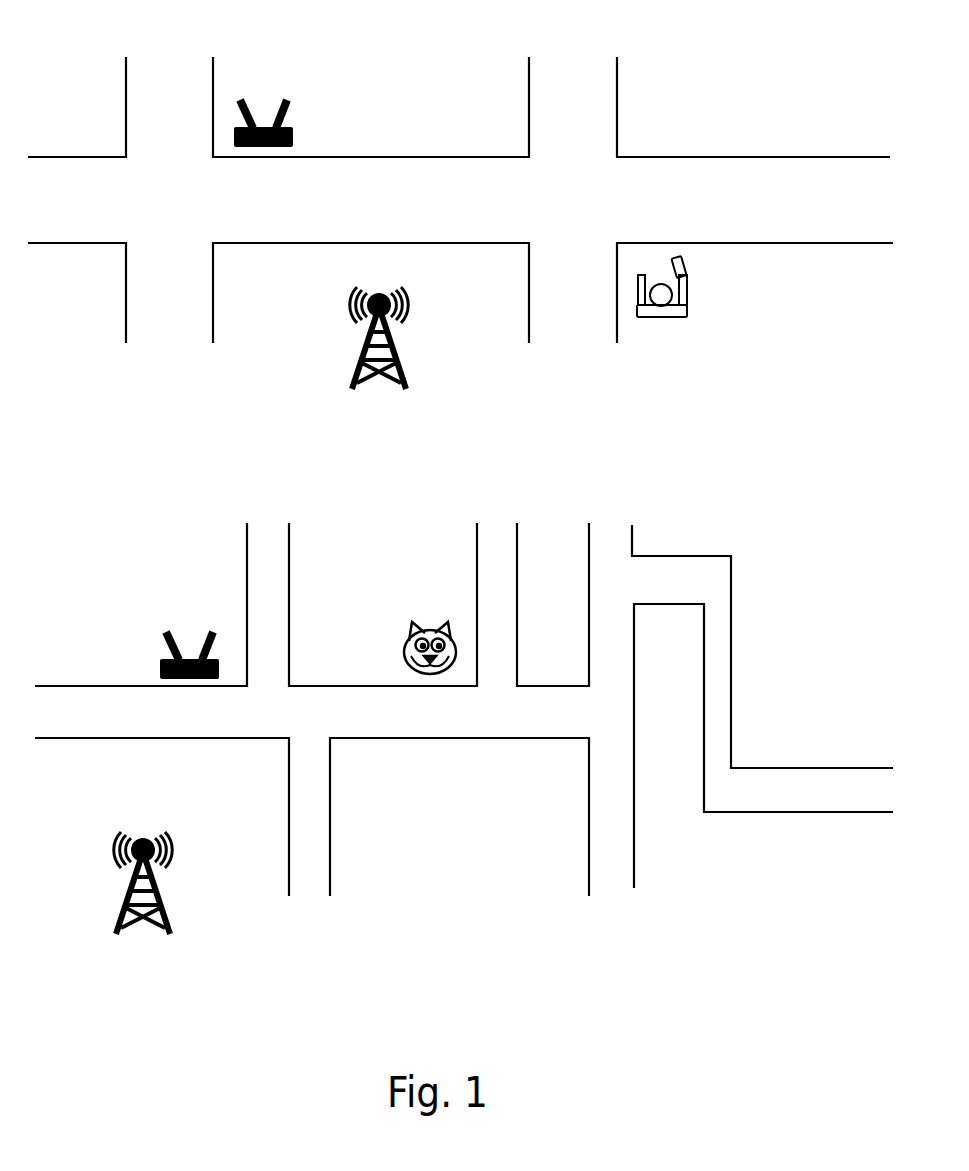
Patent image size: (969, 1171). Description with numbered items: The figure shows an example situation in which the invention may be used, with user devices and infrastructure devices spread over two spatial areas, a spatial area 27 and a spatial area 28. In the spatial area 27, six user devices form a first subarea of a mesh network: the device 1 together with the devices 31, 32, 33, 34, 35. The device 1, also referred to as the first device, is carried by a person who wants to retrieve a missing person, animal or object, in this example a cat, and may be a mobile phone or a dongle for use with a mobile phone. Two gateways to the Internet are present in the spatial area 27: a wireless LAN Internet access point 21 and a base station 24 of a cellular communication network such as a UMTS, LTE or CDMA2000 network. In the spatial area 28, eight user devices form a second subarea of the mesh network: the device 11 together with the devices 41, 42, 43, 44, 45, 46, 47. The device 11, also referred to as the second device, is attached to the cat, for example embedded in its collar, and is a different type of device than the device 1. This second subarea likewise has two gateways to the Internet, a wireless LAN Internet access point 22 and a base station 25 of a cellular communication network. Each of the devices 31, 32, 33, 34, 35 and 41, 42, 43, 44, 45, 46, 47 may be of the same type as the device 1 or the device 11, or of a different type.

The device 1 is at (666, 318).
The device 11 is at (425, 631).
The wireless LAN Internet access point 21 is at (293, 133).
The wireless LAN Internet access point 22 is at (157, 680).
The base station 24 is at (398, 352).
The base station 25 is at (163, 894).
The spatial area 27 is at (842, 40).
The spatial area 28 is at (842, 939).
The device 31 is at (77, 200).
The device 32 is at (371, 195).
The device 33 is at (371, 127).
The device 34 is at (371, 293).
The device 35 is at (755, 200).
The device 41 is at (141, 628).
The device 42 is at (162, 817).
The device 43 is at (383, 604).
The device 44 is at (459, 817).
The device 45 is at (548, 763).
The device 46 is at (553, 604).
The device 47 is at (762, 706).